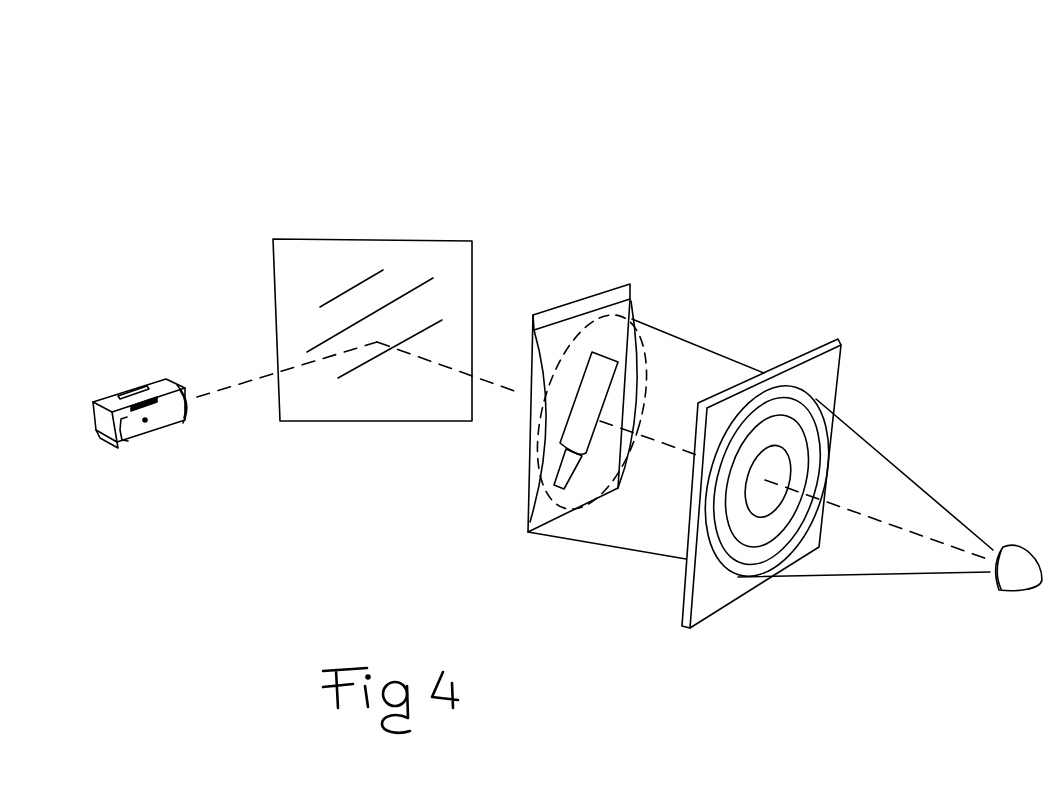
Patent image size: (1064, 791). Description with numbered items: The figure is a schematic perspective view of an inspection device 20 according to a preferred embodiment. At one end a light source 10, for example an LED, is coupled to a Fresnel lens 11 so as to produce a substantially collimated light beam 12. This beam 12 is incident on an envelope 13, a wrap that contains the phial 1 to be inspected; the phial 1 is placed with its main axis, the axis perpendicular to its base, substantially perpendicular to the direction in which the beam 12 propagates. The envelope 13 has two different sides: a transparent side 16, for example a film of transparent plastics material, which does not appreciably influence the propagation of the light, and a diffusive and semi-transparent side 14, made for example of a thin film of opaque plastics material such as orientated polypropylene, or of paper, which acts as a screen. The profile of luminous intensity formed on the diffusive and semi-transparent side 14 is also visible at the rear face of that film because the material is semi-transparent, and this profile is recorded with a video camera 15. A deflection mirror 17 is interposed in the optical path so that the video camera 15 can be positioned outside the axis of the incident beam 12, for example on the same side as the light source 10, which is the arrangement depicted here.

The inspection device 20 is at (586, 102).
The deflection mirror 17 is at (447, 255).
The video camera 15 is at (152, 425).
The phial 1 is at (610, 376).
The transparent side 16 is at (636, 421).
The diffusive and semi-transparent side 14 is at (531, 464).
The envelope 13 is at (581, 489).
The Fresnel lens 11 is at (725, 592).
The collimated light beam 12 is at (893, 482).
The light source 10 is at (1016, 580).